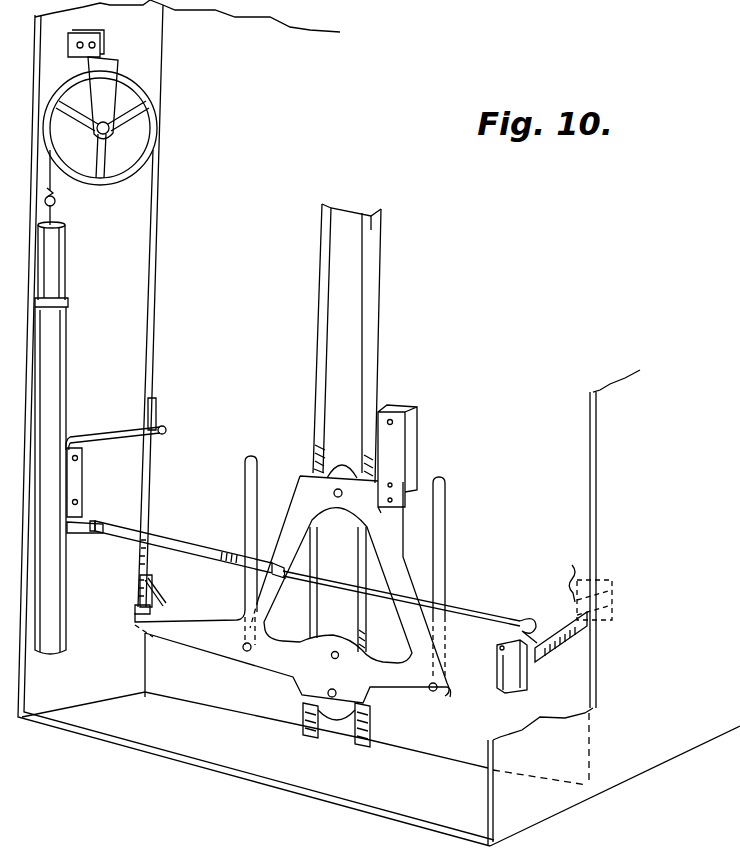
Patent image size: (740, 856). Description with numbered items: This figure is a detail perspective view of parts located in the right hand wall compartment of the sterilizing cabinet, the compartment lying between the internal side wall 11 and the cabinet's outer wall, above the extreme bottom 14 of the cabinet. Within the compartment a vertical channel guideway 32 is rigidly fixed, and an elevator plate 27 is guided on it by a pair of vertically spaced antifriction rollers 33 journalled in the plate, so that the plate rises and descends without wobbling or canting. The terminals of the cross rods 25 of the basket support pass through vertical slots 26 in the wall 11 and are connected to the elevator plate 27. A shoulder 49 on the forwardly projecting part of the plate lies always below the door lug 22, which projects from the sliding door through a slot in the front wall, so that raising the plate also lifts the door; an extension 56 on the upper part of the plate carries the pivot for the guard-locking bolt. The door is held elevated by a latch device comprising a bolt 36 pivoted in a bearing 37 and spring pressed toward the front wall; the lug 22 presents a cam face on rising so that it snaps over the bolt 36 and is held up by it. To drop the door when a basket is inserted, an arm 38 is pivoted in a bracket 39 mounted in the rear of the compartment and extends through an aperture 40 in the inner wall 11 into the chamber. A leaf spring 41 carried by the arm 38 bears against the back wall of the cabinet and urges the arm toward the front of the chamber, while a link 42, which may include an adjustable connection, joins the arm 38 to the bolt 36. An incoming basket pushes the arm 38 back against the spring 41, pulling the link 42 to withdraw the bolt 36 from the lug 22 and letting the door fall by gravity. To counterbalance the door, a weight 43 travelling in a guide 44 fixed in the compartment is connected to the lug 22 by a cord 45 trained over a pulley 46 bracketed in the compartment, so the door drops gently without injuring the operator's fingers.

The internal side wall 11 is at (437, 733).
The extreme bottom 14 is at (448, 822).
The lug 22 is at (152, 415).
The cross rods 25 is at (245, 650).
The vertical slots 26 is at (247, 490).
The elevator plate 27 is at (420, 650).
The vertical channel guideway 32 is at (335, 312).
The antifriction rollers 33 is at (322, 462).
The bolt 36 is at (105, 431).
The bearing 37 is at (70, 488).
The arm 38 is at (567, 615).
The bracket 39 is at (510, 690).
The aperture 40 is at (564, 572).
The leaf spring 41 is at (585, 632).
The link 42 is at (215, 549).
The weight 43 is at (55, 258).
The guide 44 is at (55, 343).
The cord 45 is at (157, 221).
The pulley 46 is at (152, 125).
The shoulder 49 is at (150, 613).
The extension 56 is at (393, 446).